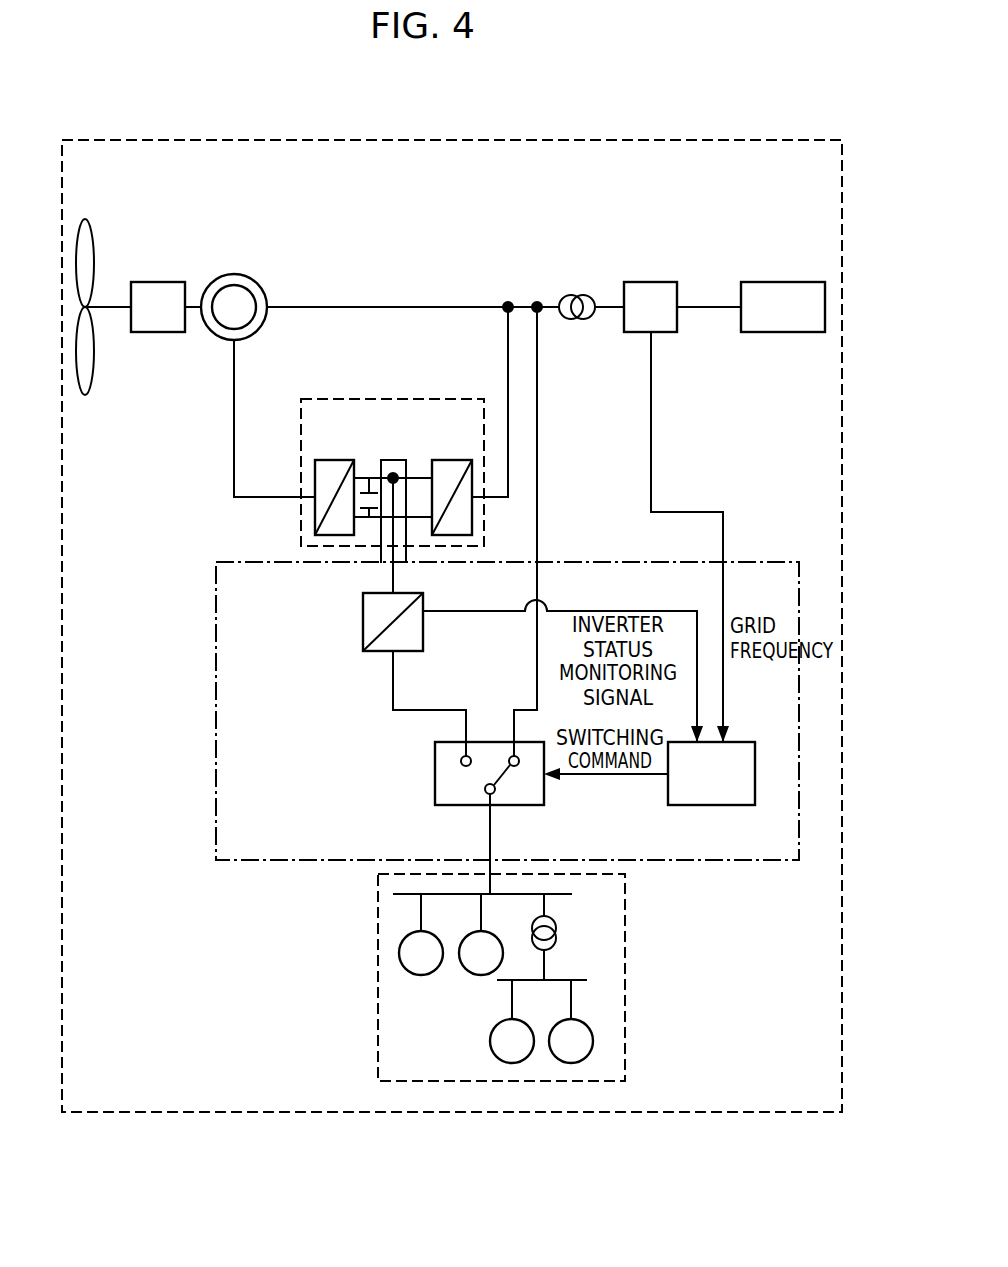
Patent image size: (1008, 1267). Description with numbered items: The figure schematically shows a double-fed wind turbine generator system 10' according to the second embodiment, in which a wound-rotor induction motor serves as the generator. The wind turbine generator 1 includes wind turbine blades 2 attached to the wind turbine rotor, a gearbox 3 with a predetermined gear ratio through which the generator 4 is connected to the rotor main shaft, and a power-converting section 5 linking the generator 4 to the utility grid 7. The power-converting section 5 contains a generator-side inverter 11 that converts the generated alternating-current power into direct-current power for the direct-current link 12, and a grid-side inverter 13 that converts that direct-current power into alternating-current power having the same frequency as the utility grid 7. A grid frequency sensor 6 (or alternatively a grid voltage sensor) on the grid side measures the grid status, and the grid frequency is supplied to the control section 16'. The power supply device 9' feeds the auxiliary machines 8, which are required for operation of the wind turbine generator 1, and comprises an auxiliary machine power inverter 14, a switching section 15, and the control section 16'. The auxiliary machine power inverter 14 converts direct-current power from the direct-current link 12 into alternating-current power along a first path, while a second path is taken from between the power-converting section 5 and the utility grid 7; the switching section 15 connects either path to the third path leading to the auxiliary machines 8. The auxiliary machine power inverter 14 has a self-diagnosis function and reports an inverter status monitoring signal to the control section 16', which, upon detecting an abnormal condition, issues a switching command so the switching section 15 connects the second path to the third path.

The wind turbine generator system 10' is at (452, 590).
The wind turbine generator 1 is at (384, 236).
The wind turbine blades 2 is at (88, 222).
The gearbox 3 is at (158, 282).
The generator 4 is at (233, 274).
The power-converting section 5 is at (398, 399).
The grid frequency sensor 6 is at (651, 282).
The utility grid 7 is at (785, 332).
The auxiliary machines 8 is at (627, 955).
The power supply device 9' is at (471, 711).
The generator-side inverter 11 is at (333, 460).
The direct-current link 12 is at (418, 477).
The grid-side inverter 13 is at (455, 460).
The auxiliary machine power inverter 14 is at (363, 617).
The switching section 15 is at (435, 775).
The control section 16' is at (649, 800).